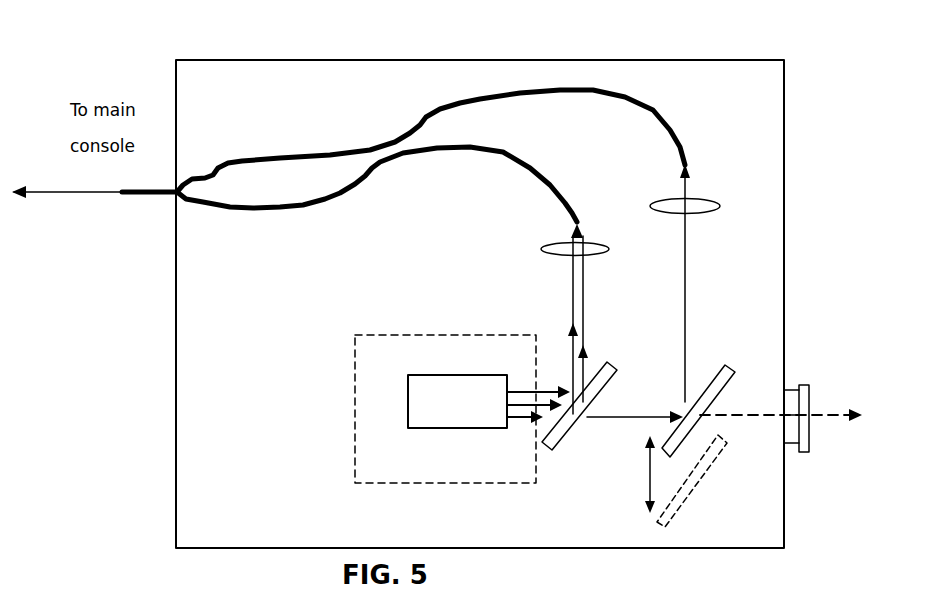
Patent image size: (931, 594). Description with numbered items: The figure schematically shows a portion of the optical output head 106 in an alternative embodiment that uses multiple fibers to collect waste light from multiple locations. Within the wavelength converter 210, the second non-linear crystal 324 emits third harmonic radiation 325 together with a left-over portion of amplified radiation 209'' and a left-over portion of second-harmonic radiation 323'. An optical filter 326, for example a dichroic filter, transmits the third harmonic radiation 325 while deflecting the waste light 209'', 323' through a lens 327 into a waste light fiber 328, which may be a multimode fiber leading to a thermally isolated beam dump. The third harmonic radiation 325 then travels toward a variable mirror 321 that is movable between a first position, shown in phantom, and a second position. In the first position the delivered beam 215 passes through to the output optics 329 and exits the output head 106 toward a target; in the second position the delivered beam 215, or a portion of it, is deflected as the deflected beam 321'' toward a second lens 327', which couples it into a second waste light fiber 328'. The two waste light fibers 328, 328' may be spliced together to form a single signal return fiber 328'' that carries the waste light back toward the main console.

The optical output head 106 is at (392, 60).
The signal return fiber 328'' is at (94, 220).
The waste light fiber 328 is at (377, 184).
The second waste light fiber 328' is at (466, 141).
The lens 327 is at (536, 244).
The lens 327' is at (721, 218).
The left-over portion of amplified output radiation 209'' is at (581, 319).
The left-over portion of second-harmonic radiation 323' is at (512, 361).
The deflected beam 321'' is at (731, 283).
The wavelength converter 210 is at (384, 335).
The second non-linear crystal 324 is at (458, 428).
The third harmonic radiation 325 is at (527, 420).
The optical filter 326 is at (552, 452).
The variable mirror 321 is at (707, 426).
The output optics 329 is at (802, 385).
The delivered radiation 215 is at (820, 417).